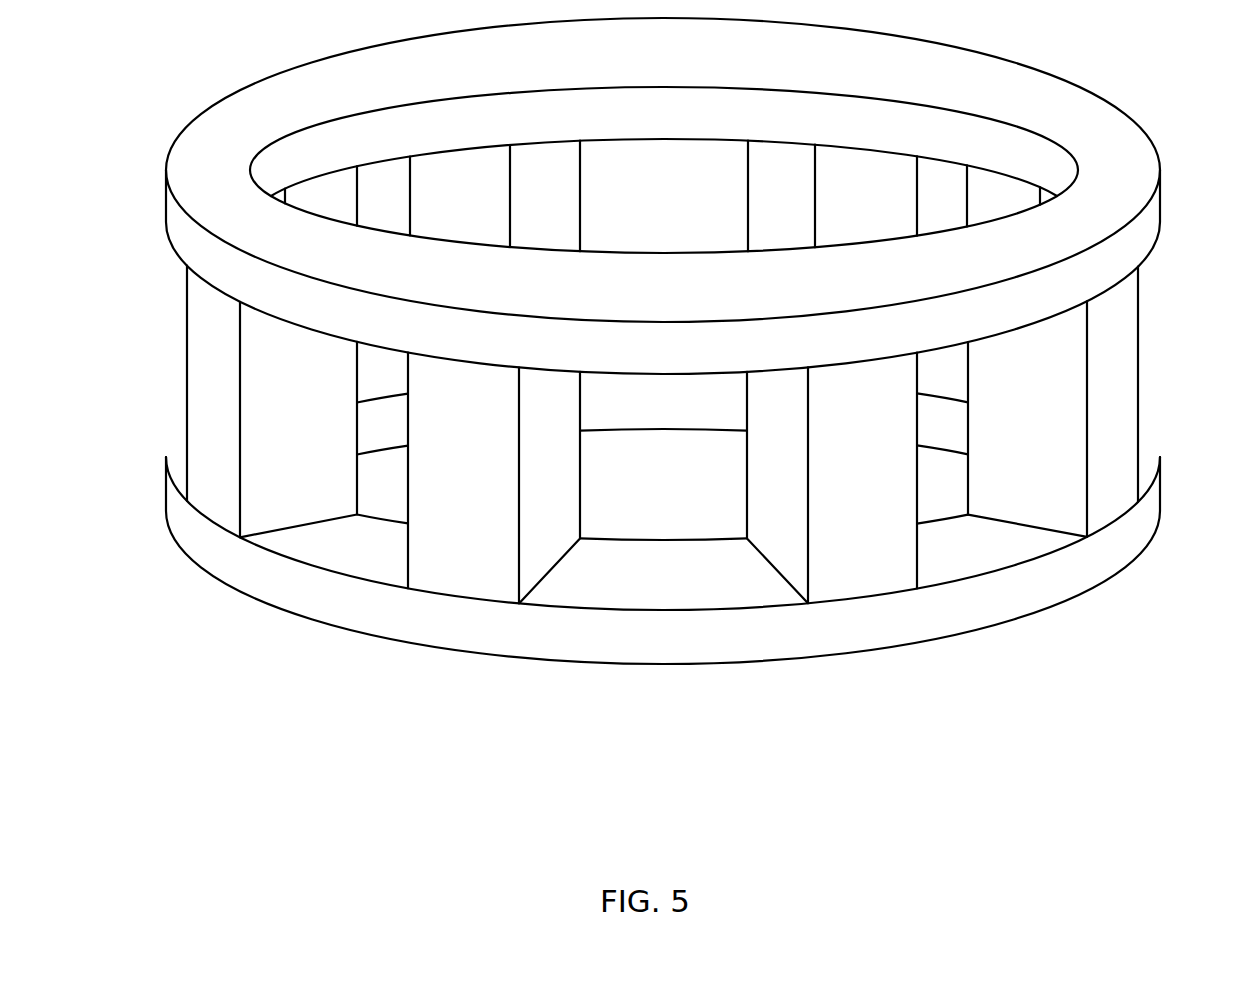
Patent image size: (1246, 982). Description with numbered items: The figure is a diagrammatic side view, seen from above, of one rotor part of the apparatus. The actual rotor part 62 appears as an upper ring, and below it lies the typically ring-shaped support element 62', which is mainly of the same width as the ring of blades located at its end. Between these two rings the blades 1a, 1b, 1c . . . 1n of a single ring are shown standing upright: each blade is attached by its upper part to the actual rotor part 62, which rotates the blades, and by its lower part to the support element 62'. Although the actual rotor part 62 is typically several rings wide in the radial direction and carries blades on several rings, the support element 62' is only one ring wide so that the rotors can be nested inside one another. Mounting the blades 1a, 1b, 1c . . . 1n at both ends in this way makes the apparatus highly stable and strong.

The rotor part 62 is at (704, 196).
The support element 62' is at (663, 588).
The blade 1a is at (858, 553).
The blade 1b is at (475, 568).
The blade 1c is at (272, 505).
The blade 1n is at (1108, 485).